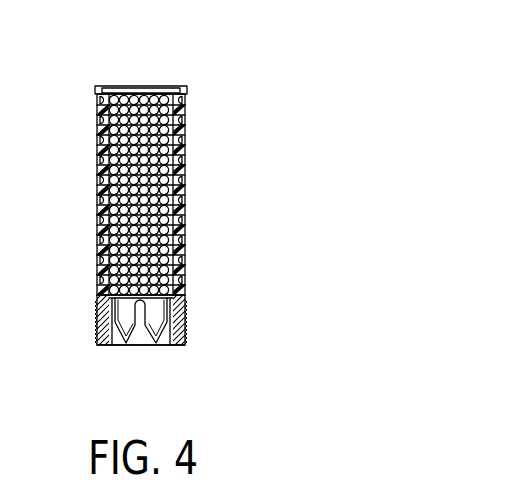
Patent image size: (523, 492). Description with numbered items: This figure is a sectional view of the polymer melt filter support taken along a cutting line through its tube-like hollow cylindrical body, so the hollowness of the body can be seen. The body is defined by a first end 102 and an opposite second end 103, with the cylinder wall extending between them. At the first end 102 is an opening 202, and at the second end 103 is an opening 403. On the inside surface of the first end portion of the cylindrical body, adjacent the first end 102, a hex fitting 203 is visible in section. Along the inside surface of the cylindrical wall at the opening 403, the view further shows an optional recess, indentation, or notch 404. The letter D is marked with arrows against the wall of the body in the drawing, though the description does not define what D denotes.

The second end 103 is at (103, 72).
The opening 403 is at (145, 88).
The notch 404 is at (177, 88).
The diameter D is at (177, 153).
The hex fitting 203 is at (155, 310).
The opening 202 is at (157, 338).
The first end 102 is at (127, 361).